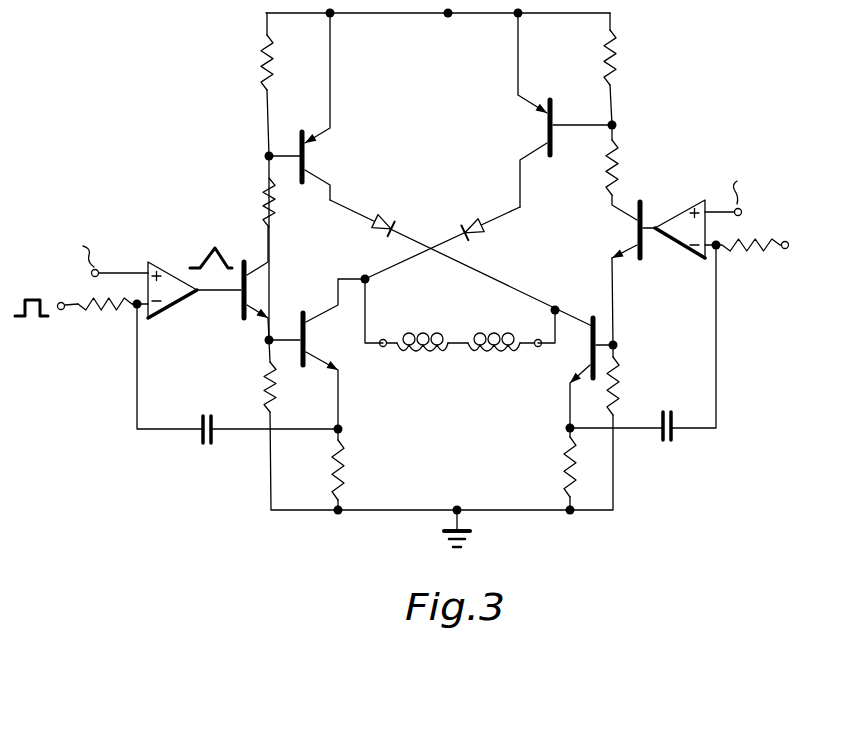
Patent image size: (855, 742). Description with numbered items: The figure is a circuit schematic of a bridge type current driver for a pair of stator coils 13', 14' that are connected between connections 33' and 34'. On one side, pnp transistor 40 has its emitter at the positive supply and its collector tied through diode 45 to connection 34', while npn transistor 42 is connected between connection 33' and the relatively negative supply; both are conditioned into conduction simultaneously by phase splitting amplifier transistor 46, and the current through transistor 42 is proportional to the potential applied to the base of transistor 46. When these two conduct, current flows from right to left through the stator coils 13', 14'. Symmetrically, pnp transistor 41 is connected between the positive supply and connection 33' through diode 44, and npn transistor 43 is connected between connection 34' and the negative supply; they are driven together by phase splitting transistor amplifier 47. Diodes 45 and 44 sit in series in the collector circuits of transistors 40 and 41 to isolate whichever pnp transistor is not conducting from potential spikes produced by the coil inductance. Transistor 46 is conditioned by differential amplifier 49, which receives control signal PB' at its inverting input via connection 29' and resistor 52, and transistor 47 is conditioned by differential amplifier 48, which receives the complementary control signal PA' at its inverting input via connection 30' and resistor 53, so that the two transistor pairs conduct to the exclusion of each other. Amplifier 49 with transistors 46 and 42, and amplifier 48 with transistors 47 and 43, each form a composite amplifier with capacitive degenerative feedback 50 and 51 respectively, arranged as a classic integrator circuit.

The pnp transistor 40 is at (347, 168).
The pnp transistor 41 is at (530, 138).
The npn transistor 42 is at (350, 348).
The npn transistor 43 is at (580, 363).
The diode 44 is at (503, 261).
The diode 45 is at (372, 260).
The phase splitting amplifier transistor 46 is at (288, 300).
The phase splitting transistor amplifier 47 is at (615, 243).
The differential amplifier 48 is at (687, 195).
The differential amplifier 49 is at (182, 248).
The capacitive degenerative feedback 50 is at (203, 445).
The capacitive degenerative feedback 51 is at (664, 442).
The resistor 52 is at (93, 311).
The resistor 53 is at (745, 250).
The connection 29' is at (64, 330).
The connection 30' is at (781, 269).
The connection 33' is at (394, 322).
The connection 34' is at (521, 322).
The stator coil 13' is at (432, 365).
The stator coil 14' is at (494, 365).